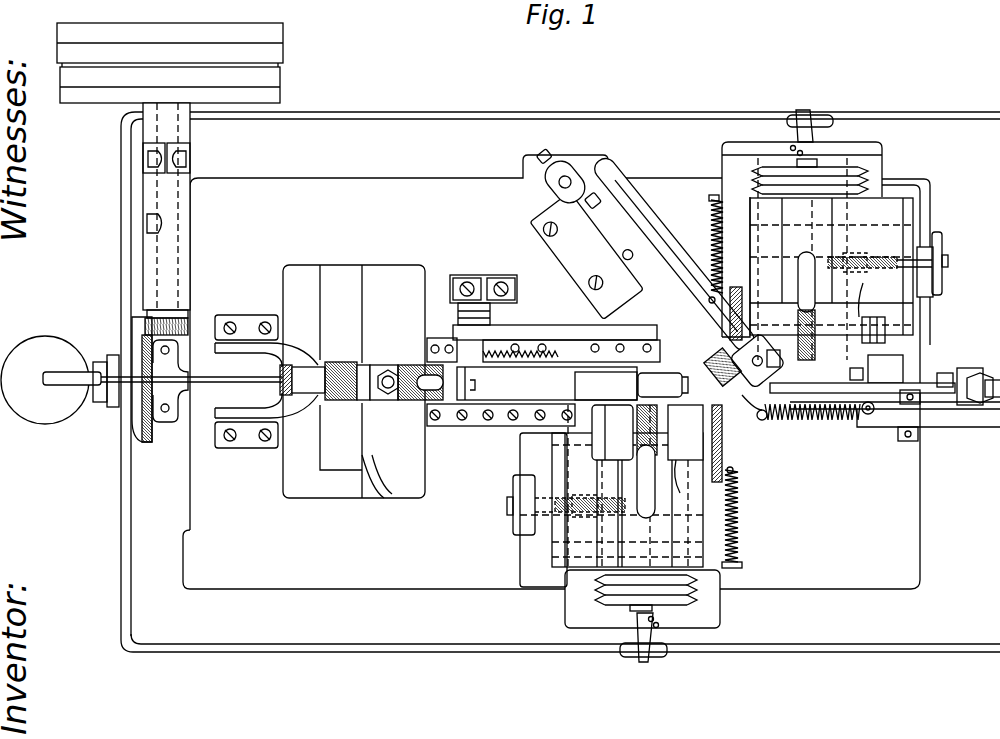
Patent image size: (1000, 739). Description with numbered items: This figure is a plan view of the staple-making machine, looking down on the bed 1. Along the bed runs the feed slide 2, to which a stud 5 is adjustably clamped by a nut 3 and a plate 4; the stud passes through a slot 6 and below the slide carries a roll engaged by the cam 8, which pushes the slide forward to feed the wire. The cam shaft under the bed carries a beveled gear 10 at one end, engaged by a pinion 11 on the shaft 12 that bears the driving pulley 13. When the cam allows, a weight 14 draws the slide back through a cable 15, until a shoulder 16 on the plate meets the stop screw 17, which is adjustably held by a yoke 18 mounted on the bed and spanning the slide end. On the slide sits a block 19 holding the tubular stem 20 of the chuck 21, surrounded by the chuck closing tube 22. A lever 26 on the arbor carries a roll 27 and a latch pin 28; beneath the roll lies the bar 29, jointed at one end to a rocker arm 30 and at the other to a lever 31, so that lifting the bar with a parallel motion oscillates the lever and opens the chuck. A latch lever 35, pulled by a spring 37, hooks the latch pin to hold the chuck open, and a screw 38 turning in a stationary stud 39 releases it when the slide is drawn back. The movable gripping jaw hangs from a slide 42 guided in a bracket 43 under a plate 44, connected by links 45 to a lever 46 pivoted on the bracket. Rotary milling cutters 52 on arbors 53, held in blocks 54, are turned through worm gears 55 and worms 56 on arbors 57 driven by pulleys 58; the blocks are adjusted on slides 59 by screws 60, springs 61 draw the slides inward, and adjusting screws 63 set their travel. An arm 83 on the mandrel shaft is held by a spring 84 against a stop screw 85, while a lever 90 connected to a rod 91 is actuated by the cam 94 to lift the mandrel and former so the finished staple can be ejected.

The bed 1 is at (556, 372).
The feed slide 2 is at (460, 426).
The nut 3 is at (386, 365).
The plate 4 is at (404, 365).
The stud 5 is at (385, 400).
The slot 6 is at (415, 400).
The cam 8 is at (378, 480).
The beveled gear 10 is at (134, 426).
The pinion 11 is at (190, 328).
The shaft 12 is at (188, 272).
The driving pulley 13 is at (170, 63).
The weight 14 is at (141, 380).
The cable 15 is at (114, 356).
The shoulder 16 is at (366, 364).
The stop screw 17 is at (340, 362).
The yoke 18 is at (293, 345).
The block 19 is at (573, 386).
The tubular stem 20 is at (547, 383).
The chuck 21 is at (663, 385).
The chuck closing tube 22 is at (630, 380).
The lever 26 is at (560, 328).
The roll 27 is at (590, 285).
The latch pin 28 is at (512, 340).
The bar 29 is at (546, 326).
The rocker arm 30 is at (635, 290).
The lever 31 is at (478, 276).
The lever 35 is at (515, 362).
The spring 37 is at (543, 360).
The screw 38 is at (437, 338).
The stud 39 is at (449, 345).
The slide 42 is at (770, 418).
The bracket 43 is at (643, 251).
The plate 44 is at (718, 345).
The links 45 is at (723, 366).
The lever 46 is at (600, 250).
The rotary milling cutters 52 is at (745, 292).
The arbors 53 is at (882, 370).
The blocks 54 is at (840, 228).
The worm gears 55 is at (752, 317).
The worms 56 is at (785, 333).
The arbors 57 is at (660, 524).
The driving pulleys 58 is at (762, 165).
The slides 59 is at (714, 220).
The screws 60 is at (890, 257).
The springs 61 is at (712, 232).
The adjusting screws 63 is at (818, 128).
The arm 83 is at (840, 422).
The spring 84 is at (868, 416).
The stop screw 85 is at (820, 375).
The lever 90 is at (915, 395).
The rod 91 is at (950, 412).
The cam 94 is at (968, 368).